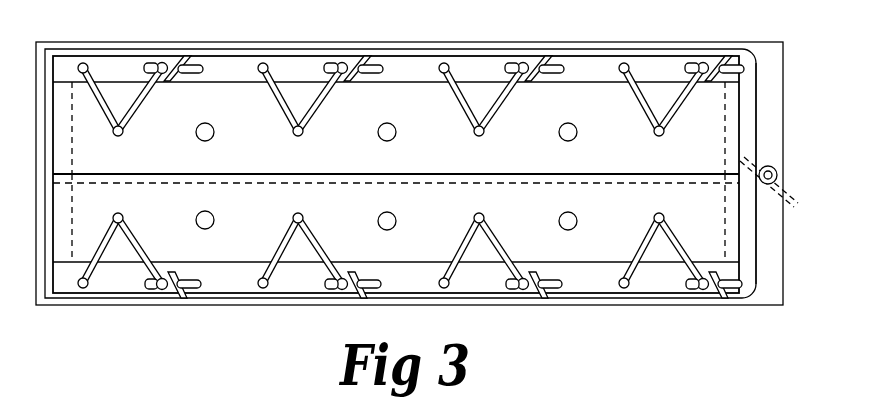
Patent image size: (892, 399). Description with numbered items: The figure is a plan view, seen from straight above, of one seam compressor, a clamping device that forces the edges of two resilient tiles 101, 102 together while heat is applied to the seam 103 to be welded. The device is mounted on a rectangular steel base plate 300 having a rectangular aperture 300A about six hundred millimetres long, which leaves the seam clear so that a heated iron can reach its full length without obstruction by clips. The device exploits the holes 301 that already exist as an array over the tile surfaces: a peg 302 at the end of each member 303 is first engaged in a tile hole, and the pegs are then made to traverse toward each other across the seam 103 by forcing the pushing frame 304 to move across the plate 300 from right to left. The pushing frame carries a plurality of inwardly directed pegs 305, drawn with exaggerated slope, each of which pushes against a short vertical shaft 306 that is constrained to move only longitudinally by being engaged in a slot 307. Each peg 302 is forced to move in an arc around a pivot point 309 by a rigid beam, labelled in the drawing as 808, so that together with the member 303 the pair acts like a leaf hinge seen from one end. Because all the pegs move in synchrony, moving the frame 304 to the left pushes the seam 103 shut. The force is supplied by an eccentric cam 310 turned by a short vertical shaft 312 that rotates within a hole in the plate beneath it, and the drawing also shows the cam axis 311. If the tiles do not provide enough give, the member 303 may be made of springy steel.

The tile 101 is at (372, 160).
The tile 102 is at (377, 209).
The seam 103 is at (505, 185).
The rectangular steel base plate 300 is at (682, 306).
The rectangular aperture 300A is at (596, 92).
The hole 301 is at (215, 218).
The peg 302 is at (163, 196).
The member 303 is at (185, 236).
The pushing frame 304 is at (764, 52).
The inwardly directed peg 305 is at (183, 298).
The short vertical shaft 306 is at (162, 291).
The slot 307 is at (142, 291).
The link arm 808 is at (110, 226).
The pivot point 309 is at (80, 289).
The eccentric cam 310 is at (758, 158).
The pivot axis 311 is at (793, 202).
The short vertical shaft 312 is at (778, 180).